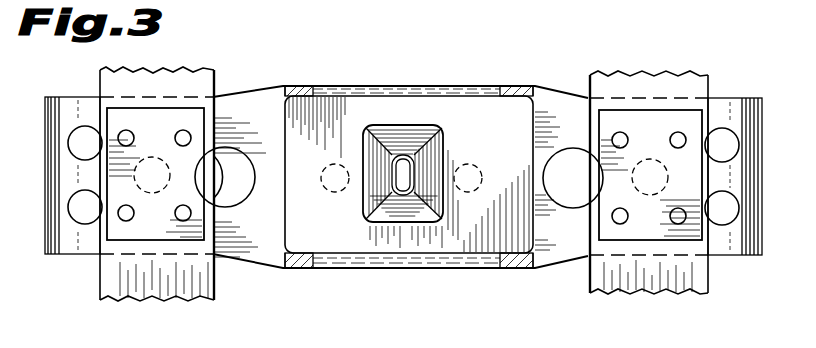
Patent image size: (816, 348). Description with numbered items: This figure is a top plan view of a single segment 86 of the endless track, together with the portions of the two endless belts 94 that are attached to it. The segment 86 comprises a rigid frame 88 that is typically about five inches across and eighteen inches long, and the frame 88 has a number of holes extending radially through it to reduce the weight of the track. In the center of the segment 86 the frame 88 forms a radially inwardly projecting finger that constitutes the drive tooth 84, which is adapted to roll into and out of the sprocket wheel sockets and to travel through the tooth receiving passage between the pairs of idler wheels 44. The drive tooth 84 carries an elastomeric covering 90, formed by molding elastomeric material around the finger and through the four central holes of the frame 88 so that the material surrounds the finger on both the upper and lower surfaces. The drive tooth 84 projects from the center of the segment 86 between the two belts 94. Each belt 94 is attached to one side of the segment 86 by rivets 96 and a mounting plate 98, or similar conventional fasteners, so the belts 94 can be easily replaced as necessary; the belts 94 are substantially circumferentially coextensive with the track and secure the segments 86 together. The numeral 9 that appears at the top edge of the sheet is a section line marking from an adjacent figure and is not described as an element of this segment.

The section line 9 is at (333, 0).
The idler wheels 44 is at (425, 8).
The drive tooth 84 is at (403, 230).
The segment 86 is at (478, 266).
The rigid frame 88 is at (263, 248).
The elastomeric covering 90 is at (404, 135).
The endless belts 94 is at (116, 286).
The rivets 96 is at (121, 132).
The mounting plate 98 is at (170, 117).